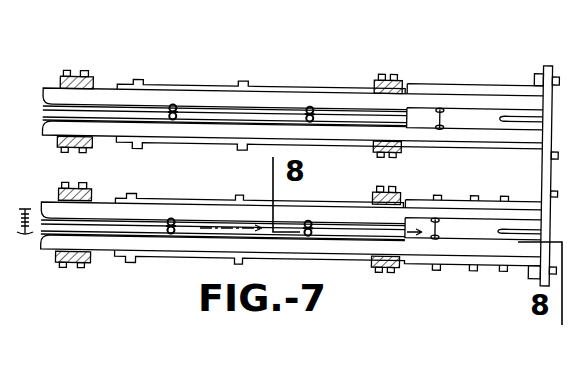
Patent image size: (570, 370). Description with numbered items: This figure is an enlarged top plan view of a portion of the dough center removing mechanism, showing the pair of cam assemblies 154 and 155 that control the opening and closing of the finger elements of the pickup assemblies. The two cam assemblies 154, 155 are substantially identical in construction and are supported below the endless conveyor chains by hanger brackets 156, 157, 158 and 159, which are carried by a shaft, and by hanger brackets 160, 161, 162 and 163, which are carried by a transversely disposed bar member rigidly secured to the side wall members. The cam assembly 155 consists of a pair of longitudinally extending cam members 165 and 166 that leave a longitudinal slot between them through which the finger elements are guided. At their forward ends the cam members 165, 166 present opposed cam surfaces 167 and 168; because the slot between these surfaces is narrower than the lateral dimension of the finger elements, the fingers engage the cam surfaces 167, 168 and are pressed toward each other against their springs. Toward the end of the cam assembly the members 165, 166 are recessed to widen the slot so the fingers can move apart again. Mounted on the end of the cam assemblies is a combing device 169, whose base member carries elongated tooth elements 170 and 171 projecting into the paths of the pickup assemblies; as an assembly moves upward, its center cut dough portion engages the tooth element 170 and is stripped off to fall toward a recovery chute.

The cam assembly 154 is at (258, 96).
The cam assembly 155 is at (158, 251).
The hanger bracket 156 is at (80, 75).
The hanger bracket 157 is at (62, 143).
The hanger bracket 158 is at (92, 192).
The hanger bracket 159 is at (55, 267).
The hanger bracket 160 is at (384, 80).
The hanger bracket 161 is at (366, 155).
The hanger bracket 162 is at (398, 202).
The hanger bracket 163 is at (385, 277).
The cam member 165 is at (201, 207).
The cam member 166 is at (292, 252).
The cam surface 167 is at (140, 222).
The cam surface 168 is at (108, 232).
The combing device 169 is at (531, 180).
The tooth element 170 is at (512, 238).
The tooth element 171 is at (518, 117).